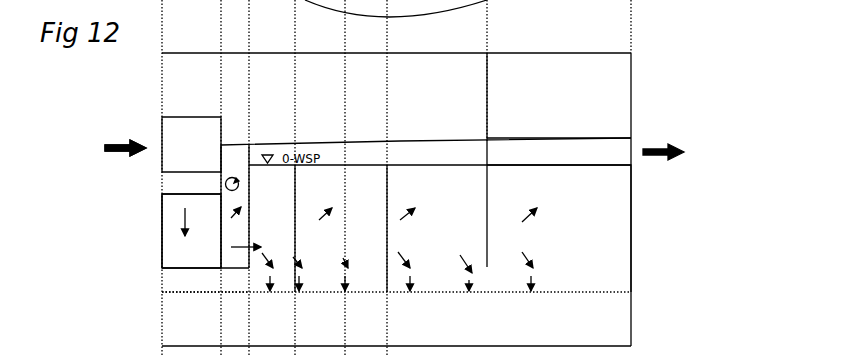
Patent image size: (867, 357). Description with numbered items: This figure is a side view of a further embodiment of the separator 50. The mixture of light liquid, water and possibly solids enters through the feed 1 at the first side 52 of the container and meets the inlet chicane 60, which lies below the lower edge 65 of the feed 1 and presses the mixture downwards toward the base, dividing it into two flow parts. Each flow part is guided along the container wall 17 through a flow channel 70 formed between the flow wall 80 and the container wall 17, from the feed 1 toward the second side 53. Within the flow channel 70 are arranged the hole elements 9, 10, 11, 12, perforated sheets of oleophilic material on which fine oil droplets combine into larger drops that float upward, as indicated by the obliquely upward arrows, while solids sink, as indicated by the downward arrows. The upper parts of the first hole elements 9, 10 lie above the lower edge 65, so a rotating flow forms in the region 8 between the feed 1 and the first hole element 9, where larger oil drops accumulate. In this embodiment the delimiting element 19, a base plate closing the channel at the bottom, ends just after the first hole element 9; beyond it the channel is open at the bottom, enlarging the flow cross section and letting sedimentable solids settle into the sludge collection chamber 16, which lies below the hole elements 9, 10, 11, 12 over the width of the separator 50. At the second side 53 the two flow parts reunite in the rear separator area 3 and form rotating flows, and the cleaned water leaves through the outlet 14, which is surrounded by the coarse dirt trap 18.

The feed 1 is at (160, 130).
The region 8 is at (160, 170).
The lower edge 65 is at (172, 190).
The first side 52 is at (158, 228).
The inlet chicane 60 is at (158, 205).
The delimiting element 19 is at (175, 268).
The coarse dirt trap 18 is at (299, 139).
The hole element 11 is at (332, 0).
The first hole element 9 is at (252, 198).
The second hole element 10 is at (293, 185).
The hole element 12 is at (387, 178).
The first flow channel 70 is at (461, 240).
The outlet 14 is at (540, 139).
The container wall 17 is at (632, 72).
The separator 50 is at (616, 26).
The flow wall 80 is at (487, 183).
The rear separator area 3 is at (608, 233).
The second side 53 is at (632, 203).
The sludge collection chamber 16 is at (578, 341).